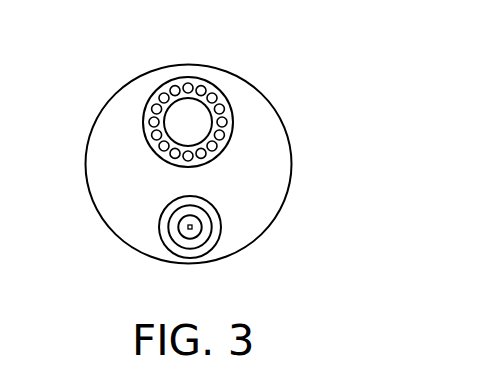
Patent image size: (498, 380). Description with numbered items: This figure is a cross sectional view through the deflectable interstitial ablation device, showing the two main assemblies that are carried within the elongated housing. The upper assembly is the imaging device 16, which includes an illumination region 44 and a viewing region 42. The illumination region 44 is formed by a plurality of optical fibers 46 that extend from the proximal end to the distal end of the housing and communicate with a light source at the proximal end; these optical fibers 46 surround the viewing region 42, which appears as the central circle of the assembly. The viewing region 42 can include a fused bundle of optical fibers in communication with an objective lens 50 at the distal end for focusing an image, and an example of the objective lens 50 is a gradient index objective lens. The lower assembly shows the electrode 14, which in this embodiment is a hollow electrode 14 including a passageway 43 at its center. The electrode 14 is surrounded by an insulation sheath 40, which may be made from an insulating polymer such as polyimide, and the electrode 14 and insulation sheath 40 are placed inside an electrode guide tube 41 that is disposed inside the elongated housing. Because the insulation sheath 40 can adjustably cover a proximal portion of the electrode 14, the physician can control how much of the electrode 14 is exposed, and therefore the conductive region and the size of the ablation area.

The imaging device 16 is at (195, 165).
The viewing region 42 is at (202, 113).
The objective lens 50 is at (177, 115).
The optical fibers 46 is at (149, 122).
The illumination region 44 is at (220, 138).
The electrode guide tube 41 is at (167, 218).
The insulation sheath 40 is at (178, 237).
The electrode 14 is at (200, 227).
The passageway 43 is at (190, 230).